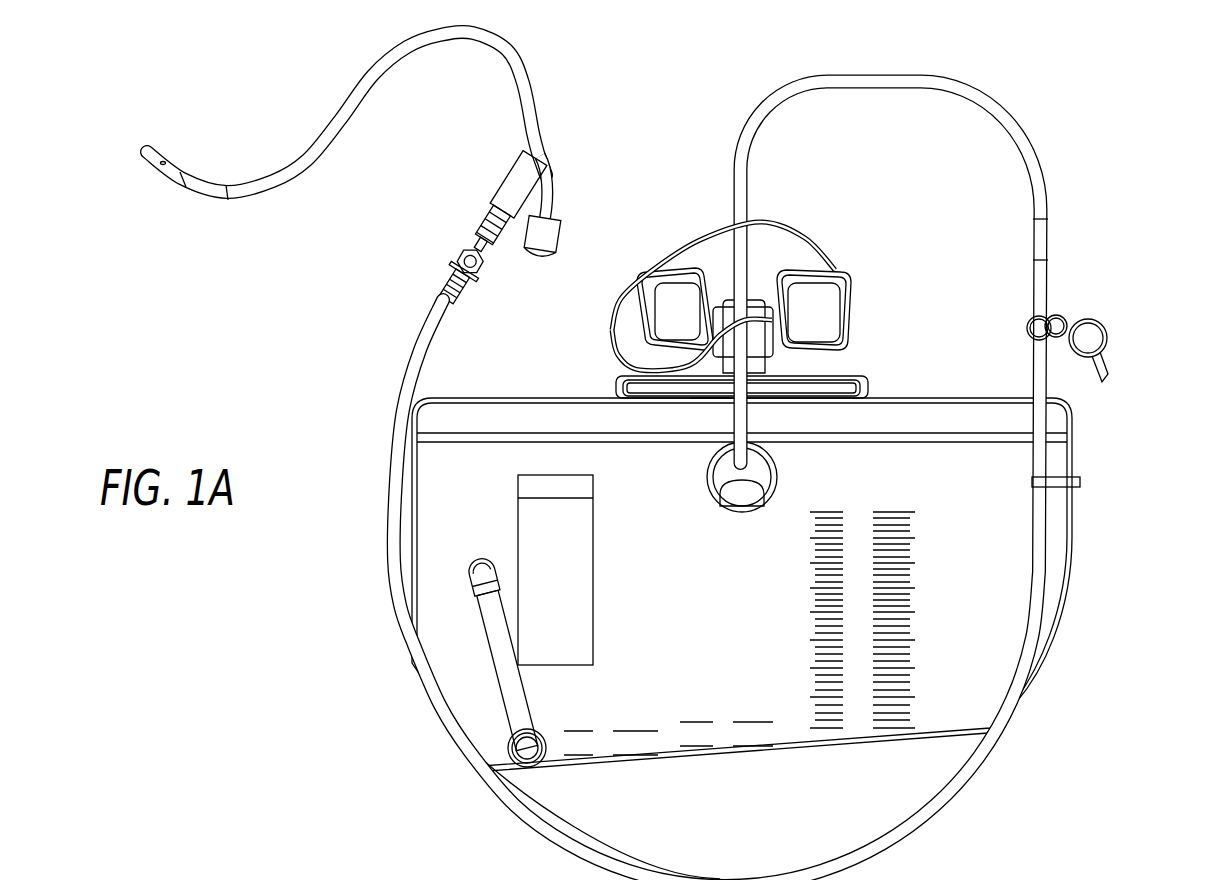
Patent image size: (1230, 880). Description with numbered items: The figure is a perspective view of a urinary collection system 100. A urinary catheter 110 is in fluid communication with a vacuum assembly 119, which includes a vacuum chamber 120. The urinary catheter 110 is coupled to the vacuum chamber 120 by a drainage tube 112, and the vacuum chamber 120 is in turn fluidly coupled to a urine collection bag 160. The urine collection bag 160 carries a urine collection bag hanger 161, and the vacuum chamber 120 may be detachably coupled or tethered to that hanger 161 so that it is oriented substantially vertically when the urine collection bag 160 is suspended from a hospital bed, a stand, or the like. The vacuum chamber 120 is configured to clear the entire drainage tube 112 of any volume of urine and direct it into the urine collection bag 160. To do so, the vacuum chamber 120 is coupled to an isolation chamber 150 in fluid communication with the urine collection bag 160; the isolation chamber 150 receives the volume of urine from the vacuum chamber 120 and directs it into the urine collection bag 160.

The urinary collection system 100 is at (798, 463).
The urinary catheter 110 is at (306, 153).
The drainage tube 112 is at (408, 356).
The vacuum assembly 119 is at (712, 408).
The vacuum chamber 120 is at (748, 418).
The isolation chamber 150 is at (727, 477).
The urine collection bag 160 is at (481, 397).
The urine collection bag hanger 161 is at (830, 272).